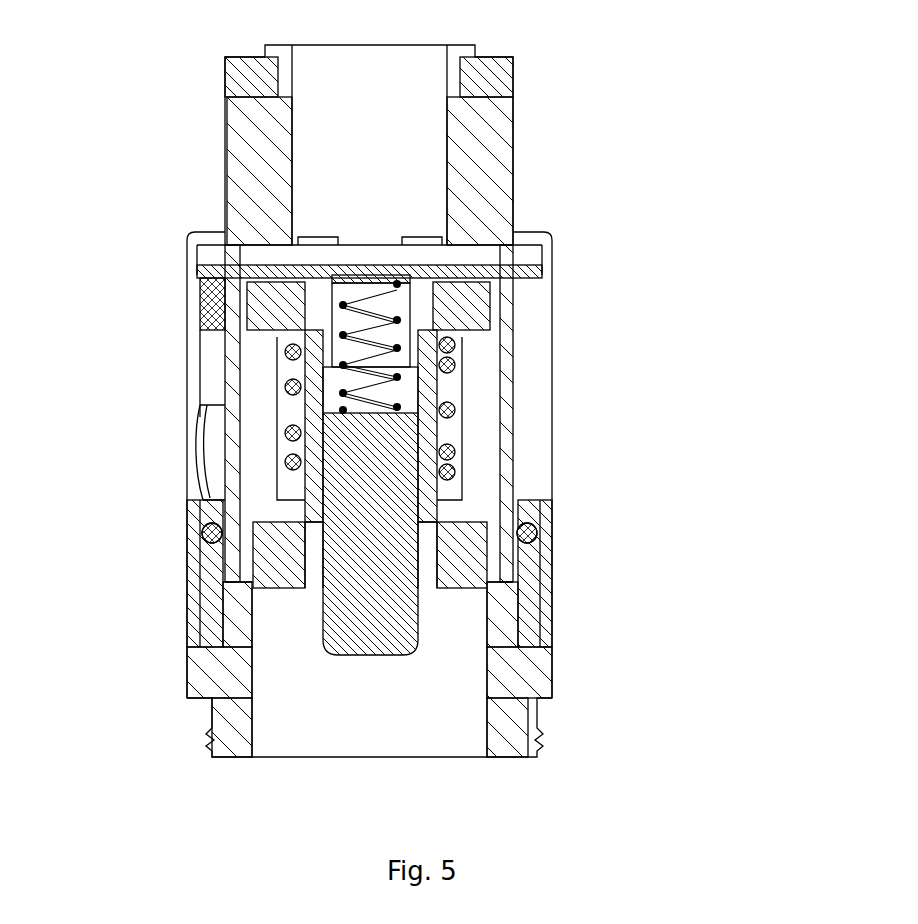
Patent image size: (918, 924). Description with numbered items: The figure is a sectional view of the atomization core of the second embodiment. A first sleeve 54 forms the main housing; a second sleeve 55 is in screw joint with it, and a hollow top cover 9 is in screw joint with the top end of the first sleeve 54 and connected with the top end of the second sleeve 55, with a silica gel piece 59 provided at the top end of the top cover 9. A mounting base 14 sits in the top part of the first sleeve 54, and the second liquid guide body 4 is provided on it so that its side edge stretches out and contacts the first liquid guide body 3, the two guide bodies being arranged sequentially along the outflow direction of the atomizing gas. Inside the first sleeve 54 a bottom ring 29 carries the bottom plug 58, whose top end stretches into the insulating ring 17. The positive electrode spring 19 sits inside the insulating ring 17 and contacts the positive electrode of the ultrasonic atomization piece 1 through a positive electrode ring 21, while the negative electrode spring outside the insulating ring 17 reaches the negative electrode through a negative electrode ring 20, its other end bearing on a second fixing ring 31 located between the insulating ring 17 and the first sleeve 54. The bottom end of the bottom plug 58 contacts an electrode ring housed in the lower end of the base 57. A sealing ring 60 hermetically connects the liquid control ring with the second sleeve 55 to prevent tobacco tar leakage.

The ultrasonic atomization piece 1 is at (485, 280).
The first liquid guide body 3 is at (232, 365).
The second liquid guide body 4 is at (415, 272).
The top cover 9 is at (262, 159).
The mounting base 14 is at (472, 312).
The insulating ring 17 is at (295, 410).
The positive electrode spring 19 is at (293, 432).
The negative electrode ring 20 is at (207, 277).
The positive electrode ring 21 is at (402, 323).
The bottom ring 29 is at (467, 555).
The second fixing ring 31 is at (282, 495).
The first sleeve 54 is at (230, 714).
The second sleeve 55 is at (192, 622).
The base 57 is at (193, 565).
The bottom plug 58 is at (372, 602).
The silica gel piece 59 is at (495, 67).
The sealing ring 60 is at (530, 535).